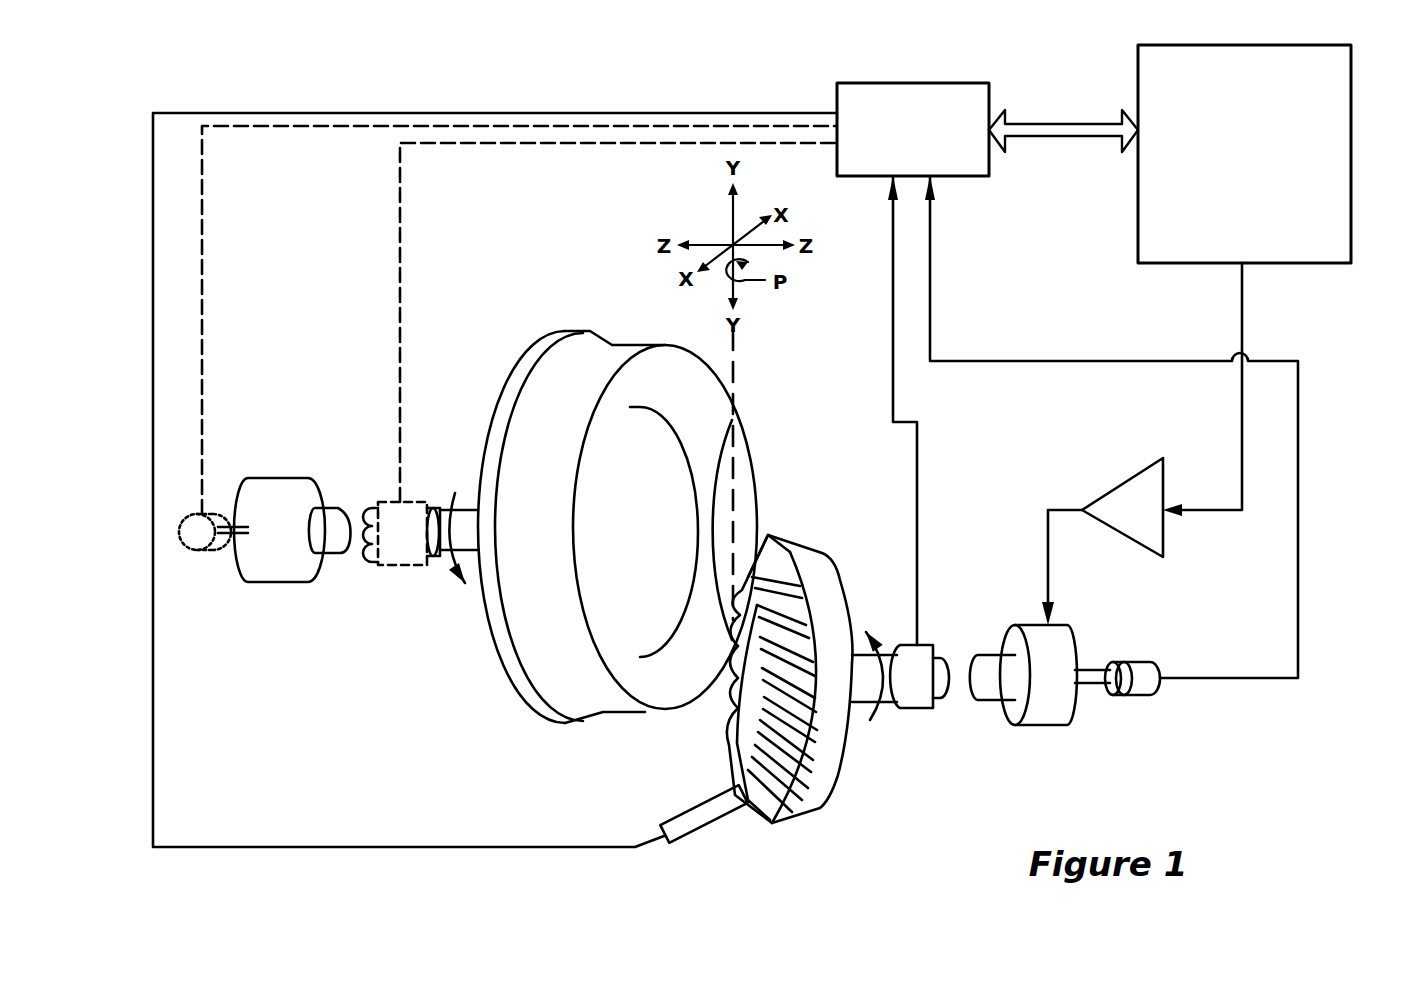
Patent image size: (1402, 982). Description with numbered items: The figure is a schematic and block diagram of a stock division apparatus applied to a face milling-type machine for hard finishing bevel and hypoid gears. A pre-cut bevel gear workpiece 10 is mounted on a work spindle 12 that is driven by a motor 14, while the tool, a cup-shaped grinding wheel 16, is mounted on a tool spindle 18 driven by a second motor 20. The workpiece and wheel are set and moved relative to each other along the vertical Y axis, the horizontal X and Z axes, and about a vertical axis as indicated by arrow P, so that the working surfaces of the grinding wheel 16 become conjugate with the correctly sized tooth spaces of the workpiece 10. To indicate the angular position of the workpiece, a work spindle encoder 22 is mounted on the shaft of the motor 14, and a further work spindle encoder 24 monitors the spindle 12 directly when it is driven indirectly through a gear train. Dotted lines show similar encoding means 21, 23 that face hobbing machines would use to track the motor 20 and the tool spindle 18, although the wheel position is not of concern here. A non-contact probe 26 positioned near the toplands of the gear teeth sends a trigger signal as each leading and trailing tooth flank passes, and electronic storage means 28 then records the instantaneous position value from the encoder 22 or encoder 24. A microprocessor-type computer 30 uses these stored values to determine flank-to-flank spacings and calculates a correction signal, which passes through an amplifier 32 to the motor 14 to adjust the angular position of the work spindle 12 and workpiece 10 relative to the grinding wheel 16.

The bevel gear workpiece 10 is at (833, 760).
The work spindle 12 is at (863, 688).
The motor 14 is at (1045, 695).
The cup-shaped grinding wheel 16 is at (713, 423).
The tool spindle 18 is at (438, 540).
The motor 20 is at (270, 498).
The encoding means 21 is at (195, 540).
The work spindle encoder 22 is at (1143, 675).
The encoding means 23 is at (407, 512).
The work spindle encoder 24 is at (917, 658).
The non-contact probe 26 is at (696, 820).
The electronic storage means 28 is at (940, 176).
The computer 30 is at (1138, 200).
The amplifier 32 is at (1122, 524).